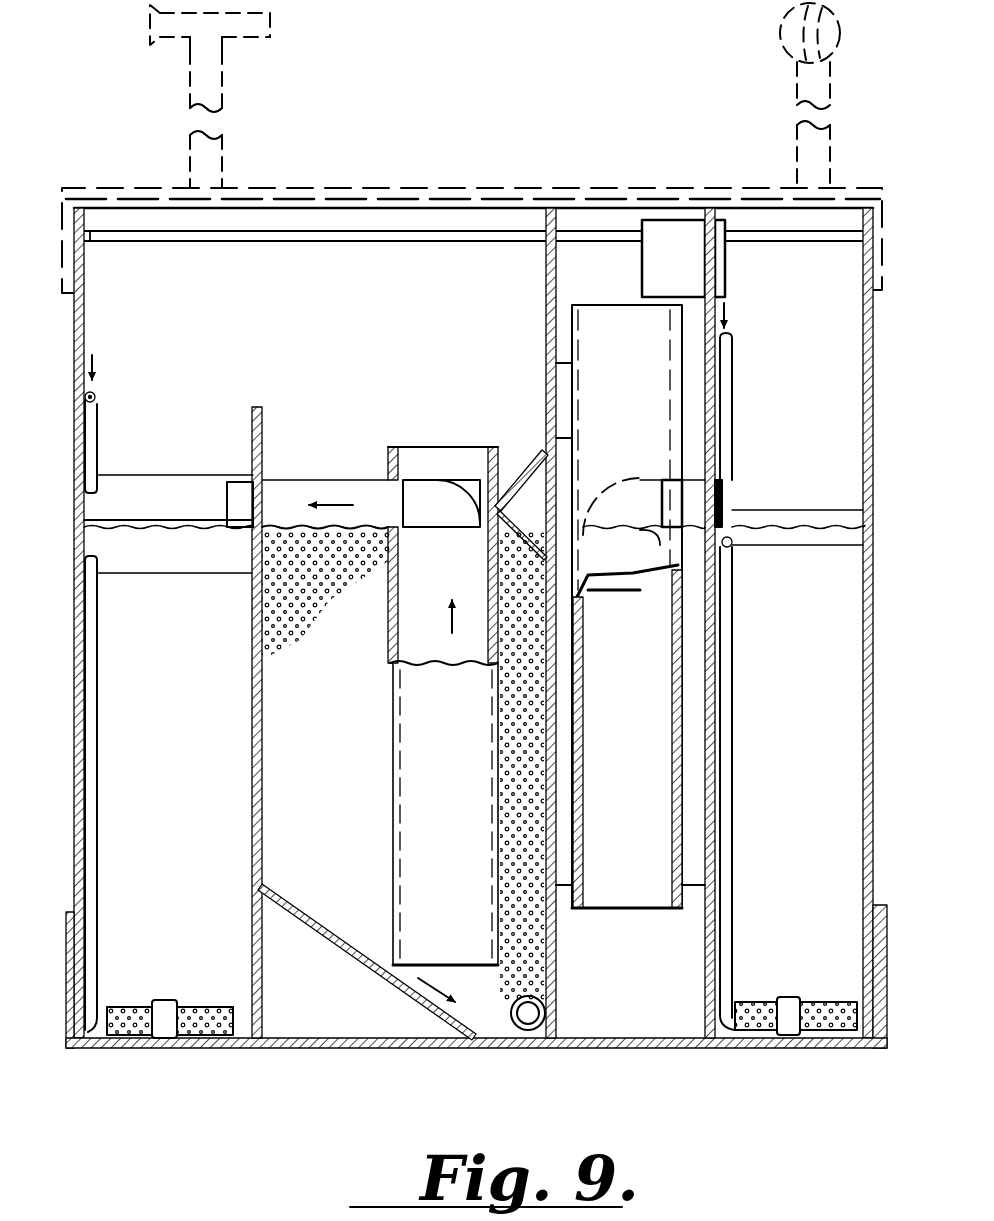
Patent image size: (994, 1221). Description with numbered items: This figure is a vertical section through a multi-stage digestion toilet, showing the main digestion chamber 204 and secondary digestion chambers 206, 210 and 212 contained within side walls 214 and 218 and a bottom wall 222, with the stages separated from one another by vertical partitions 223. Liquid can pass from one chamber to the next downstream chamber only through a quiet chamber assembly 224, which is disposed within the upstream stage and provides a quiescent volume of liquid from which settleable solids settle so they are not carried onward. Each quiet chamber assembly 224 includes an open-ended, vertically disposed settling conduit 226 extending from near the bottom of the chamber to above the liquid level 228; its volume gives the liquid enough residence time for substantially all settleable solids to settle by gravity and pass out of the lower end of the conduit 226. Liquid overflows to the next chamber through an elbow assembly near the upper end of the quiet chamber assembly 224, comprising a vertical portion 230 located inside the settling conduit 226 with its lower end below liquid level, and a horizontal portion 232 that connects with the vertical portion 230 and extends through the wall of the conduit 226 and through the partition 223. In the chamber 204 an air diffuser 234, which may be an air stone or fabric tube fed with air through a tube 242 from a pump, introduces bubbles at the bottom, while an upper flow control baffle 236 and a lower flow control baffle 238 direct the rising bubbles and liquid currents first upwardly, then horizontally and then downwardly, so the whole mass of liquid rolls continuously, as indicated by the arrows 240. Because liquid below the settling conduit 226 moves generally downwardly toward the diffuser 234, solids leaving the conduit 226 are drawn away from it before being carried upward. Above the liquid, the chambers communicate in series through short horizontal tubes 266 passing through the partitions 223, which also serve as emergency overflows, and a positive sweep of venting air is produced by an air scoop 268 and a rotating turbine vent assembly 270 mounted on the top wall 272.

The main digestion chamber 204 is at (360, 776).
The secondary digestion chamber 206 is at (210, 883).
The secondary digestion chamber 210 is at (660, 1008).
The secondary digestion chamber 212 is at (835, 612).
The side wall 214 is at (78, 342).
The side wall 218 is at (873, 340).
The bottom wall 222 is at (137, 1048).
The vertical partition 223 is at (263, 418).
The quiet chamber assembly 224 is at (630, 282).
The settling conduit 226 is at (692, 902).
The liquid level 228 is at (170, 520).
The vertical portion 230 is at (461, 483).
The horizontal portion 232 is at (330, 470).
The air diffuser 234 is at (232, 982).
The upper flow control baffle 236 is at (155, 574).
The lower flow control baffle 238 is at (307, 917).
The arrows 240 is at (290, 570).
The tube 242 is at (98, 690).
The horizontal tube 266 is at (727, 272).
The air scoop 268 is at (185, 49).
The rotating turbine vent assembly 270 is at (786, 88).
The top wall 272 is at (395, 186).